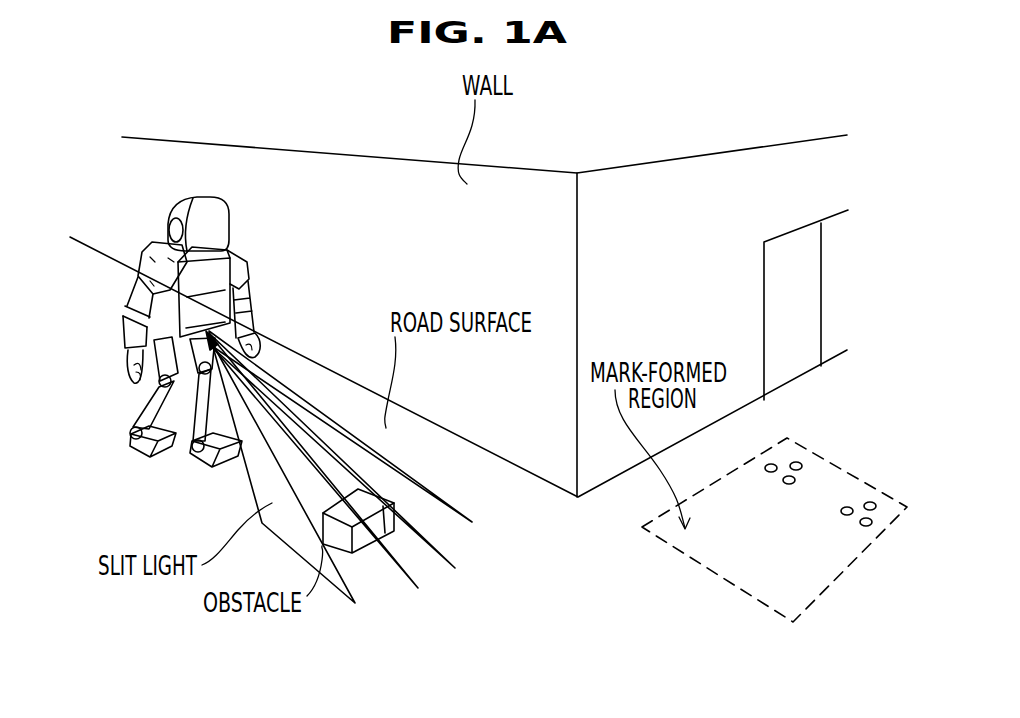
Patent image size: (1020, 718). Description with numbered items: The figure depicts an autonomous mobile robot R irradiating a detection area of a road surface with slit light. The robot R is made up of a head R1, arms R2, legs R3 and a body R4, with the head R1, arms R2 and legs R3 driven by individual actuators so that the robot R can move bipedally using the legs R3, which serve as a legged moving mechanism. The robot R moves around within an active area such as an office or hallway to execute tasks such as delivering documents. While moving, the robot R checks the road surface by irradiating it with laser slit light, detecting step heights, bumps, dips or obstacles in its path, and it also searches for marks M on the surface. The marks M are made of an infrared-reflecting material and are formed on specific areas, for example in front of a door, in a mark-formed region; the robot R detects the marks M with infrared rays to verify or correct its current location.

The robot R is at (240, 205).
The head R1 is at (170, 205).
The arms R2 is at (136, 333).
The legs R3 is at (158, 400).
The body R4 is at (222, 312).
The marks M is at (850, 498).